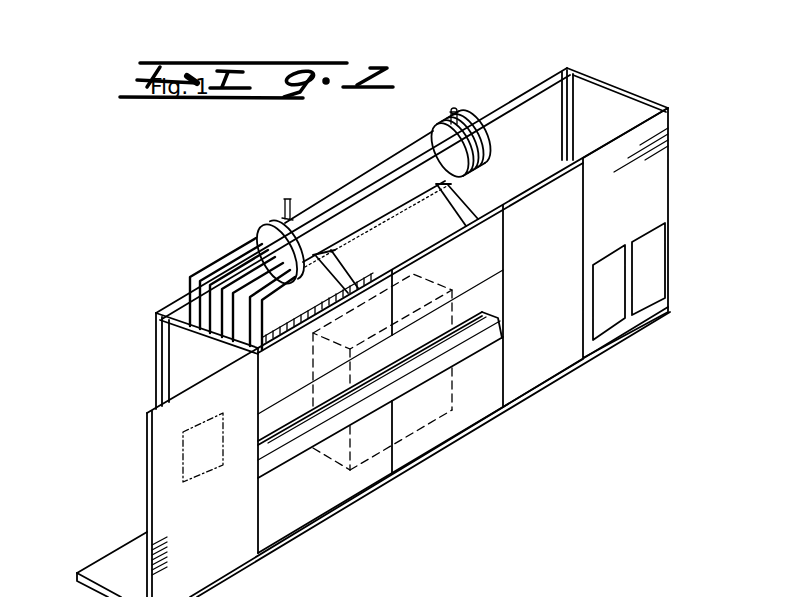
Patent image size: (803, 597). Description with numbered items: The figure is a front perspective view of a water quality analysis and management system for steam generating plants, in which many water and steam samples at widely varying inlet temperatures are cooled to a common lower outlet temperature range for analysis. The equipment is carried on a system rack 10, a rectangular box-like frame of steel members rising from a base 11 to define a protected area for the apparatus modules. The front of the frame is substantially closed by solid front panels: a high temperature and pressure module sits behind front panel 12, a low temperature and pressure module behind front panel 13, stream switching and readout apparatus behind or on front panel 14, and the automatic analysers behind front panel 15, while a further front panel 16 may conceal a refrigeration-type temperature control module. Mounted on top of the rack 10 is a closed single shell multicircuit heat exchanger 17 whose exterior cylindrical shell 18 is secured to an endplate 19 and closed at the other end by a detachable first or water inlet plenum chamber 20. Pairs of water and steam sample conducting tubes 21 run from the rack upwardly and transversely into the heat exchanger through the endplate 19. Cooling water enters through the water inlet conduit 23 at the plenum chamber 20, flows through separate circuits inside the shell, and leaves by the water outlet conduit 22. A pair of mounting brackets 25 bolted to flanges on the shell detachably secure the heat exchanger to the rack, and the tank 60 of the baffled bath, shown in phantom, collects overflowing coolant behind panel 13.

The system rack 10 is at (599, 48).
The base 11 is at (90, 573).
The front panel 12 is at (362, 475).
The front panel 13 is at (464, 411).
The front panel 14 is at (536, 360).
The front panel 15 is at (613, 317).
The front panel 16 is at (234, 548).
The multicircuit heat exchanger 17 is at (357, 180).
The cylindrical shell 18 is at (372, 170).
The endplate 19 is at (256, 232).
The first or water inlet plenum chamber 20 is at (490, 161).
The water and steam sample conducting tubes 21 is at (202, 268).
The water outlet conduit 22 is at (280, 217).
The water inlet conduit 23 is at (453, 108).
The mounting brackets 25 is at (432, 212).
The tank 60 is at (447, 318).